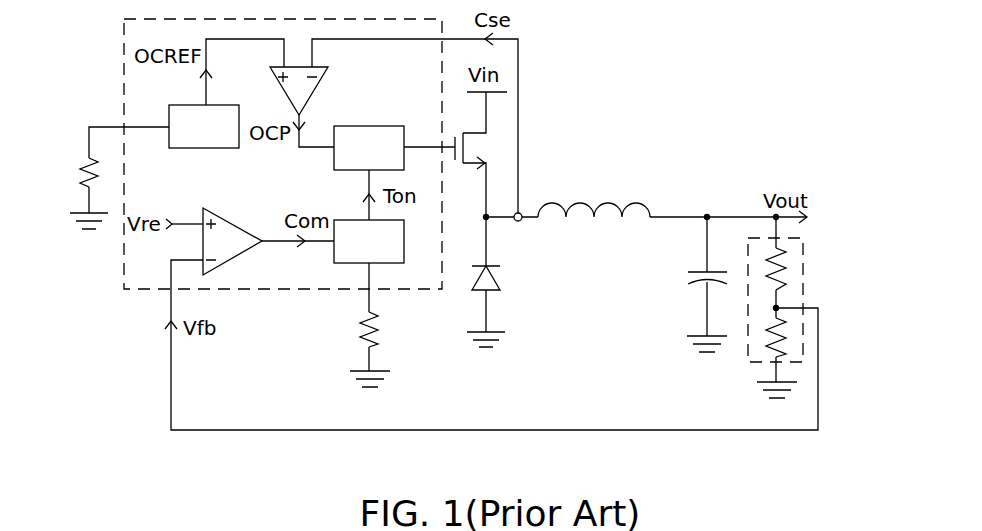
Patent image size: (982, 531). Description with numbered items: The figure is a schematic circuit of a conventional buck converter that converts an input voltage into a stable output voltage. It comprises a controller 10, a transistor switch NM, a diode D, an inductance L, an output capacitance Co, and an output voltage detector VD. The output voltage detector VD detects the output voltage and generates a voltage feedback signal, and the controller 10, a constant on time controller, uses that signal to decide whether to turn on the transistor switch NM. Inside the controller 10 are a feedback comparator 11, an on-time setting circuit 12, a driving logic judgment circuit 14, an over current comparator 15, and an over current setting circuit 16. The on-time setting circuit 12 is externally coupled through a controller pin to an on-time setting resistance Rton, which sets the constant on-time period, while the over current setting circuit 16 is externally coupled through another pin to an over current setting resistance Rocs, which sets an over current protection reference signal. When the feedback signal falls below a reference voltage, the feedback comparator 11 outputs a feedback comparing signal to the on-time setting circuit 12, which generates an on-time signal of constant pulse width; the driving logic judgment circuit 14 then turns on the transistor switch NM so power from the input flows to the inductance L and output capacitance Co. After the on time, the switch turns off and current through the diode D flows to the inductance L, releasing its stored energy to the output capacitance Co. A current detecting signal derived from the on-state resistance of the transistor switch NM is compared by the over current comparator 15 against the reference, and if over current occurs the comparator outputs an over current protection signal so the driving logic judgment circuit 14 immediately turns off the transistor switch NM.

The controller 10 is at (126, 85).
The feedback comparator 11 is at (223, 224).
The on-time setting circuit 12 is at (369, 241).
The driving logic judgment circuit 14 is at (369, 148).
The over current comparator 15 is at (308, 92).
The over current setting circuit 16 is at (204, 126).
The over current setting resistance Rocs is at (94, 178).
The on-time setting resistance Rton is at (344, 325).
The transistor switch NM is at (488, 154).
The inductance L is at (594, 195).
The diode D is at (495, 282).
The output capacitance Co is at (693, 284).
The output voltage detector VD is at (799, 298).